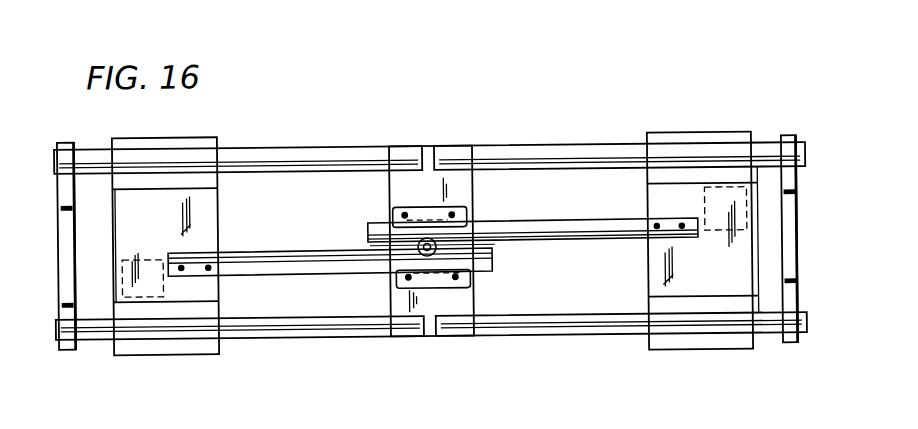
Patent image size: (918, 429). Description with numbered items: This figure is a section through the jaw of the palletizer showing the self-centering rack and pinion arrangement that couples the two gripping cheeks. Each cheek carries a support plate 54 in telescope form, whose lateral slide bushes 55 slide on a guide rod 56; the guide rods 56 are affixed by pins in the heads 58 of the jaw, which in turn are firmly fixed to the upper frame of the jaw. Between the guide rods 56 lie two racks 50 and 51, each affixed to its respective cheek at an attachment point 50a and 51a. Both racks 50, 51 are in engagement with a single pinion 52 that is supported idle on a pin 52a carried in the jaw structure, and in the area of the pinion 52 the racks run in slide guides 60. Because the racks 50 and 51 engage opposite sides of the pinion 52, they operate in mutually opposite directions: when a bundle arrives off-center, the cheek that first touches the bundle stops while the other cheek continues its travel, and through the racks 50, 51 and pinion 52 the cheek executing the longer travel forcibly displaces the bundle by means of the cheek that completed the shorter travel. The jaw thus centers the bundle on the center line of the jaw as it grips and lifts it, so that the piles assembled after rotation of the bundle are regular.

The rack 50 is at (311, 267).
The attachment point of rack 50a is at (181, 268).
The rack 51 is at (522, 231).
The attachment point of rack 51a is at (682, 225).
The pinion 52 is at (412, 247).
The pin 52a is at (440, 242).
The support plate 54 is at (185, 228).
The slide bush 55 is at (189, 352).
The guide rod 56 is at (342, 135).
The head of the jaw 58 is at (75, 296).
The slide guide 60 is at (393, 211).